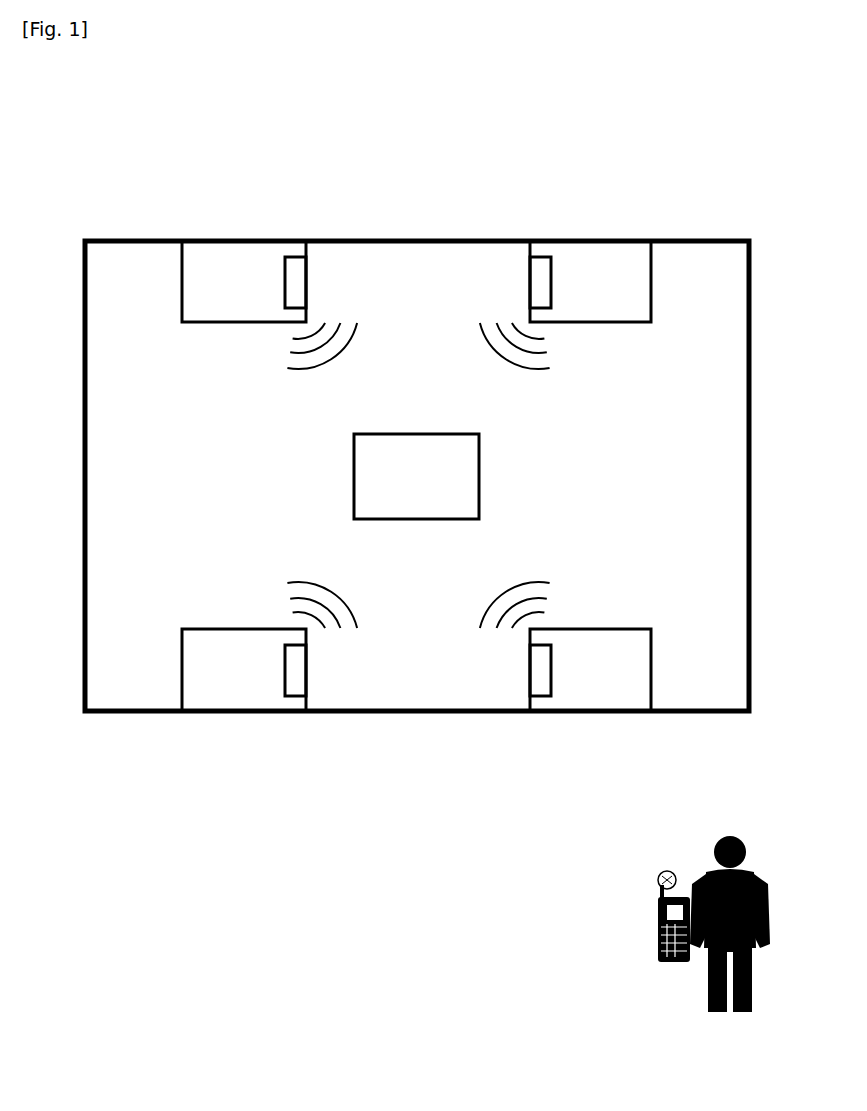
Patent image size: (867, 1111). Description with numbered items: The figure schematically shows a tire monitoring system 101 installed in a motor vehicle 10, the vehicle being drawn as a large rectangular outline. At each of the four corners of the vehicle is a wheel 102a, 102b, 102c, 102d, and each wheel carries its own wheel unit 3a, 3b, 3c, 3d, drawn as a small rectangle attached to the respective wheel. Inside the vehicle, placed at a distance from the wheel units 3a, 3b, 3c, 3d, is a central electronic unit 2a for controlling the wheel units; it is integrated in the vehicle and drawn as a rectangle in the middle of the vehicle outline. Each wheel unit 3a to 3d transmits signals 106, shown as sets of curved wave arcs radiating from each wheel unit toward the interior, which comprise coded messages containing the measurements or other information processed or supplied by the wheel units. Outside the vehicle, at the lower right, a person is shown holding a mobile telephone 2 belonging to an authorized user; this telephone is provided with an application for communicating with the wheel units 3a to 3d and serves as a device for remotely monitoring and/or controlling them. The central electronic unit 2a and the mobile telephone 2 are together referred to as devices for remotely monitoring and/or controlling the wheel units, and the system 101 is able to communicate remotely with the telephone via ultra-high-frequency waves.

The tire monitoring system 101 is at (722, 152).
The room / store space 10 is at (752, 284).
The wheel 102a is at (195, 267).
The wheel 102b is at (633, 270).
The wheel 102c is at (196, 680).
The wheel 102d is at (633, 680).
The wheel unit 3a is at (292, 252).
The wheel unit 3b is at (533, 252).
The wheel unit 3c is at (294, 700).
The wheel unit 3d is at (533, 700).
The signals 106 is at (289, 371).
The central electronic unit 2a is at (422, 453).
The mobile telephone 2 is at (656, 912).